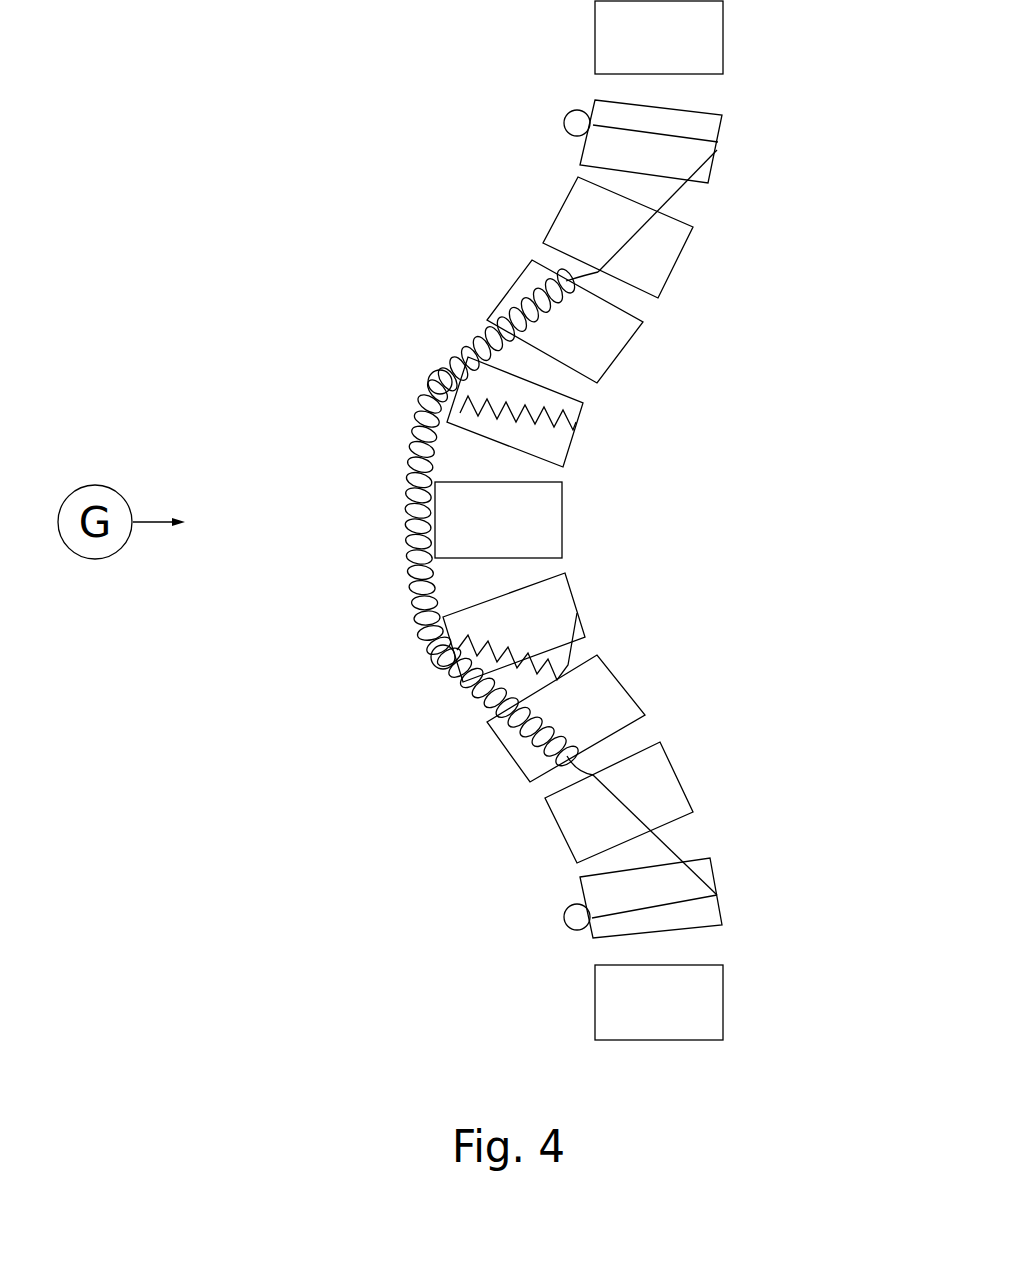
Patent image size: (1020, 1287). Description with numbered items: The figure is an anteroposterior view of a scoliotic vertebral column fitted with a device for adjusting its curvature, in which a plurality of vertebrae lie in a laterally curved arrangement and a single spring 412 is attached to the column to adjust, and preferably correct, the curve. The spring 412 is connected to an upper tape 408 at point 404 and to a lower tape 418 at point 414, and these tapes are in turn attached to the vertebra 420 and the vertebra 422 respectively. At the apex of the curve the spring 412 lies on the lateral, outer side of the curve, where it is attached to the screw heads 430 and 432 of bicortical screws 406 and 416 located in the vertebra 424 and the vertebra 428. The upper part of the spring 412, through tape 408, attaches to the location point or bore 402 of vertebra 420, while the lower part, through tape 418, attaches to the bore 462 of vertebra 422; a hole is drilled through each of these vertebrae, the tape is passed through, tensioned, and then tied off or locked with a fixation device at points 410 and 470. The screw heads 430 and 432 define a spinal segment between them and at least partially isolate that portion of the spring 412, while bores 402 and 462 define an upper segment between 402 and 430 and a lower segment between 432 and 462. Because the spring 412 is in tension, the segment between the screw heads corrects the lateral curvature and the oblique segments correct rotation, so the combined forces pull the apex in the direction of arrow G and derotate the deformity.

The bore 402 is at (717, 147).
The connection point 404 is at (597, 273).
The bicortical screw 406 is at (576, 422).
The tape 408 is at (680, 195).
The fixation point 410 is at (574, 114).
The spring 412 is at (405, 517).
The connection point 414 is at (593, 775).
The bicortical screw 416 is at (573, 610).
The tape 418 is at (673, 848).
The vertebra 420 is at (707, 111).
The vertebra 422 is at (707, 928).
The vertebra 424 is at (570, 448).
The vertebra 428 is at (567, 578).
The screw head 430 is at (437, 378).
The screw head 432 is at (432, 663).
The bore 462 is at (717, 893).
The fixation point 470 is at (565, 914).